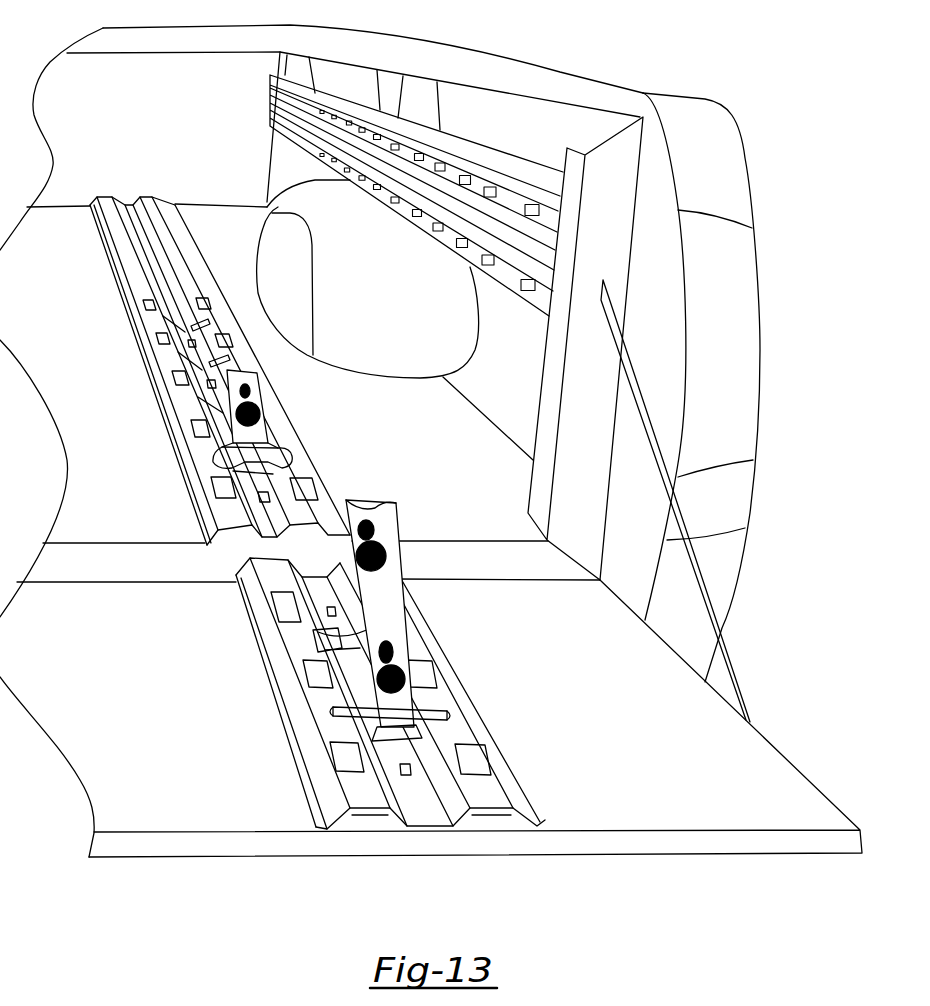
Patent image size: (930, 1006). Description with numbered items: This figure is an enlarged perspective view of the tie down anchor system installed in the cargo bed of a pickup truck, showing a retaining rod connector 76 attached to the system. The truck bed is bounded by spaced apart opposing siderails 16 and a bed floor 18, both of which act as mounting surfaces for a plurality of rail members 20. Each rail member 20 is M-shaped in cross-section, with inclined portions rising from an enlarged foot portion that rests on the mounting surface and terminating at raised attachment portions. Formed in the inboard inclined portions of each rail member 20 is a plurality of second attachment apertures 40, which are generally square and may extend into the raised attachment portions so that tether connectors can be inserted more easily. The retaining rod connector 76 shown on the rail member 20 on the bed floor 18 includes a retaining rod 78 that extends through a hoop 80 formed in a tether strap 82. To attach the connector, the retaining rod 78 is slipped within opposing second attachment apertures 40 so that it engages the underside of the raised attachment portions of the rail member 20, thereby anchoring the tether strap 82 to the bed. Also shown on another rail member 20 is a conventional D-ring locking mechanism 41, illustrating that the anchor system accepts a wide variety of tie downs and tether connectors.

The siderails 16 is at (583, 76).
The bed floor 18 is at (445, 469).
The rail members 20 is at (476, 158).
The second attachment apertures 40 is at (420, 705).
The D-ring locking mechanism 41 is at (284, 449).
The retaining rod connectors 76 is at (454, 631).
The retaining rod 78 is at (335, 728).
The hoop 80 is at (345, 707).
The tether strap 82 is at (318, 636).